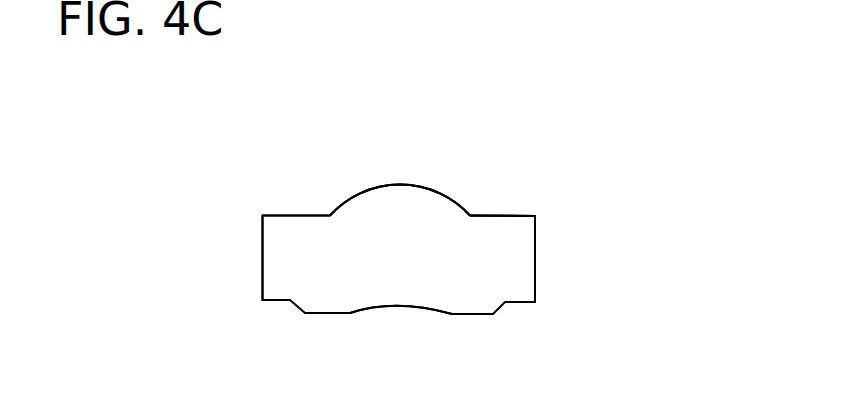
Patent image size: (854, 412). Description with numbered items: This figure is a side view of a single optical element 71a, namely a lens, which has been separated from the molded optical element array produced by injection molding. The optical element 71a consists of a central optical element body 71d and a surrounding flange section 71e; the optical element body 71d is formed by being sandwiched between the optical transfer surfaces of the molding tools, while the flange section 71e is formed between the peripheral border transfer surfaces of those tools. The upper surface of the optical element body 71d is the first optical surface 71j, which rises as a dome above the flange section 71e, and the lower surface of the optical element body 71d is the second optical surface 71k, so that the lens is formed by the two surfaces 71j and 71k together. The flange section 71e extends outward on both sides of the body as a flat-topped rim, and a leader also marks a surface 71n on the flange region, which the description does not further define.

The optical element 71a is at (589, 178).
The flange section 71e is at (300, 263).
The optical element body 71d is at (388, 240).
The first optical surface 71j is at (417, 185).
The top surface of flange 71n is at (520, 215).
The second optical surface 71k is at (393, 308).